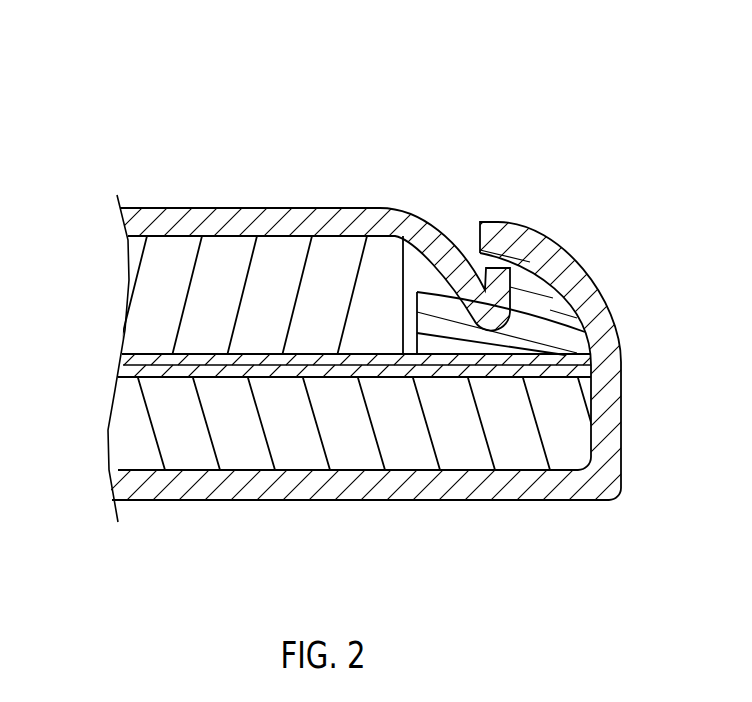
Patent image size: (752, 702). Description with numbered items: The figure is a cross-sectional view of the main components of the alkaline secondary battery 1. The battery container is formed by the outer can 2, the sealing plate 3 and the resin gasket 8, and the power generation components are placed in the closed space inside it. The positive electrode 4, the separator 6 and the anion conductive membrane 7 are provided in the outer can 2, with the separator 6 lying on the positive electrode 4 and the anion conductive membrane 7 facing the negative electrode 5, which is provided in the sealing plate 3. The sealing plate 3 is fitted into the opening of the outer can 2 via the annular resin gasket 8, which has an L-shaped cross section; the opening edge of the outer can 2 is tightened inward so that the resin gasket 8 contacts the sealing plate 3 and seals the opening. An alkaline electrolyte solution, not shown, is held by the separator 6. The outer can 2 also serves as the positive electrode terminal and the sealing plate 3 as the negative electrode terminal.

The alkaline secondary battery 1 is at (180, 88).
The outer can 2 is at (346, 503).
The sealing plate 3 is at (282, 208).
The positive electrode 4 is at (127, 430).
The negative electrode 5 is at (160, 292).
The separator 6 is at (112, 371).
The anion conductive membrane 7 is at (118, 357).
The resin gasket 8 is at (610, 310).